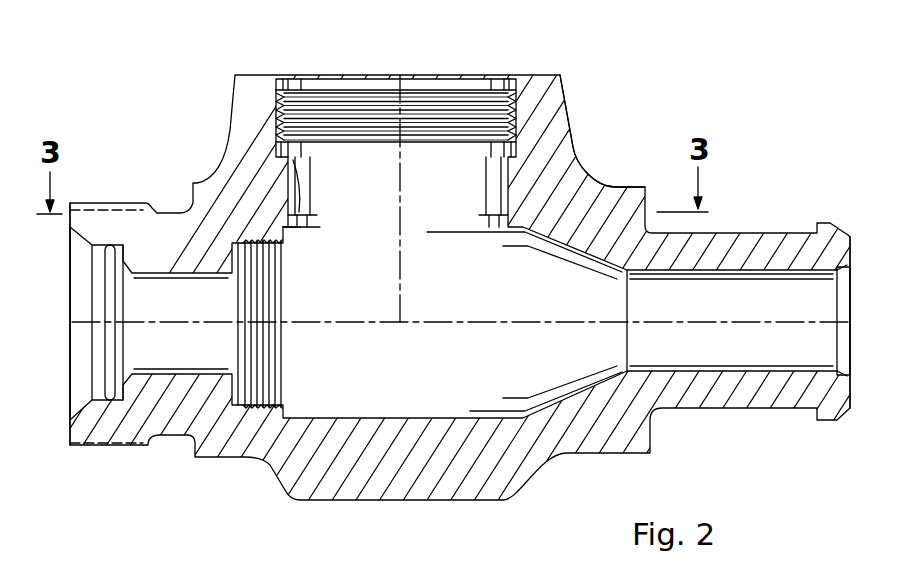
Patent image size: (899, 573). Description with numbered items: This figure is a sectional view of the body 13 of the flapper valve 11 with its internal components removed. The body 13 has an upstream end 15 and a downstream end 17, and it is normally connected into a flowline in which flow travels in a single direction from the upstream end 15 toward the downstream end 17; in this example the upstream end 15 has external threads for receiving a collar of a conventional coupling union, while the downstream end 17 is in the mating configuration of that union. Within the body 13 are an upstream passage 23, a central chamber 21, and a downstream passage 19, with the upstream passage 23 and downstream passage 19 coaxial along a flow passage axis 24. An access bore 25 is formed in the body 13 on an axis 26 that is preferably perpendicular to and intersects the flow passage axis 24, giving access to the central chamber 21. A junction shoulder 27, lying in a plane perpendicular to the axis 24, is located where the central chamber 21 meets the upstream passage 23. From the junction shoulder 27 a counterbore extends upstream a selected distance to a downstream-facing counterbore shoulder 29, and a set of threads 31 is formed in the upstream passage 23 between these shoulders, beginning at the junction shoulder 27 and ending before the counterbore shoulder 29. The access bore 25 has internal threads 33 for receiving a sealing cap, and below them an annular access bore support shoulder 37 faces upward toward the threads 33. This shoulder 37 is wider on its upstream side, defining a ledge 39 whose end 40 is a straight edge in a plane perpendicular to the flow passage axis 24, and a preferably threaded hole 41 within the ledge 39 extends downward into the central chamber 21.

The flapper valve 11 is at (605, 103).
The body 13 is at (588, 185).
The upstream end 15 is at (105, 448).
The downstream end 17 is at (775, 233).
The downstream passage 19 is at (712, 310).
The central chamber 21 is at (544, 307).
The upstream passage 23 is at (202, 309).
The flow passage axis 24 is at (660, 323).
The access bore 25 is at (500, 177).
The access bore axis 26 is at (402, 257).
The junction shoulder 27 is at (283, 237).
The counterbore shoulder 29 is at (280, 367).
The threads 31 is at (280, 387).
The internal threads 33 is at (293, 92).
The access bore support shoulder 37 is at (497, 200).
The ledge 39 is at (286, 205).
The end of ledge 40 is at (323, 213).
The hole 41 is at (284, 187).